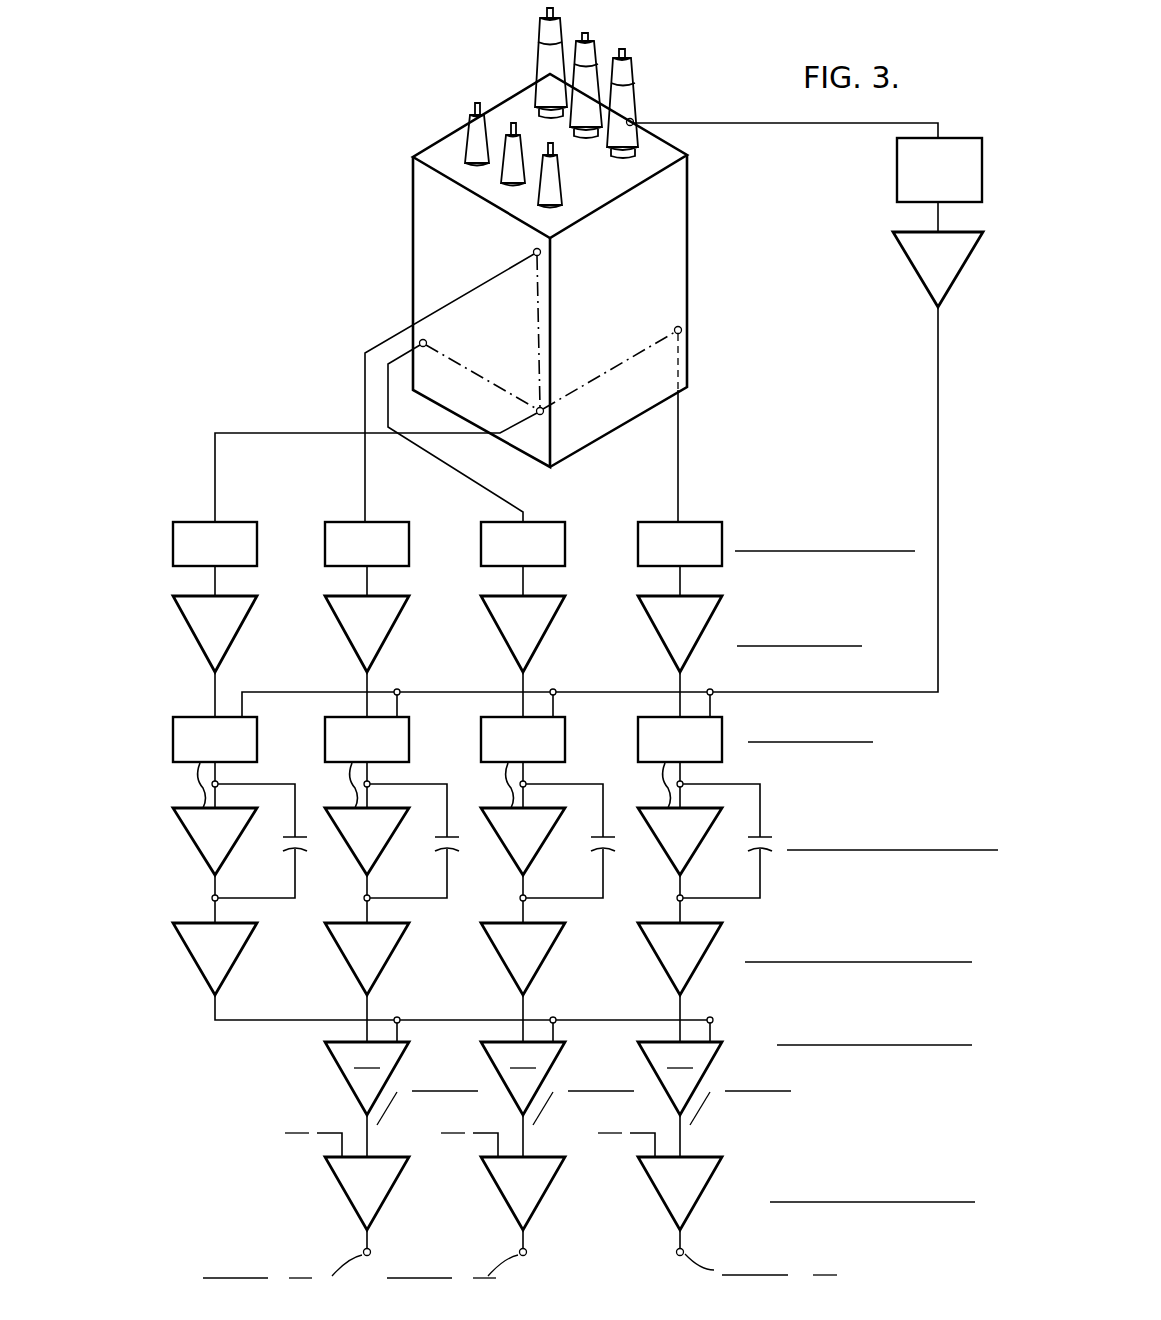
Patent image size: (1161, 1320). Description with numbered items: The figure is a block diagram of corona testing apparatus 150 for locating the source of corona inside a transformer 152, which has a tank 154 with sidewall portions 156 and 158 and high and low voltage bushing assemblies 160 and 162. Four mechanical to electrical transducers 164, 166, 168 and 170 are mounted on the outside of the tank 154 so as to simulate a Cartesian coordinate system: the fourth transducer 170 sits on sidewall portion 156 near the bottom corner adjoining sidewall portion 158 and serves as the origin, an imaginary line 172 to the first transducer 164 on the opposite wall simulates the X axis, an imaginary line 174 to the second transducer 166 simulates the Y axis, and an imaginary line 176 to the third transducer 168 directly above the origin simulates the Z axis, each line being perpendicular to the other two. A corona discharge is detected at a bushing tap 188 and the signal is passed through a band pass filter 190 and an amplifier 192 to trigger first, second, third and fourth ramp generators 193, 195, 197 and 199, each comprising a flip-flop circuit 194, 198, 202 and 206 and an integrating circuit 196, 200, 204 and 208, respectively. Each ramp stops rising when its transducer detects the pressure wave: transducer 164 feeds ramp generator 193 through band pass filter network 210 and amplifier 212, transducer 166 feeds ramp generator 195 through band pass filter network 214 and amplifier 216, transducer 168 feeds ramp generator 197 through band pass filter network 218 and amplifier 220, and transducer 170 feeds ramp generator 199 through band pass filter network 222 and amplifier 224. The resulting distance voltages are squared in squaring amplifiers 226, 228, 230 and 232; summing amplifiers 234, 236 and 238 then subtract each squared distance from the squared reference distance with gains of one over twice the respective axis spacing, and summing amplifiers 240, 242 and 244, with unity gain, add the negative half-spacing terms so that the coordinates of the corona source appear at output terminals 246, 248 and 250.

The corona testing apparatus 150 is at (594, 1291).
The transformer 152 is at (546, 267).
The tank 154 is at (412, 182).
The sidewall portion 156 is at (413, 200).
The sidewall portion 158 is at (688, 197).
The high voltage bushing assembly 160 is at (563, 30).
The low voltage bushing assembly 162 is at (490, 119).
The first mechanical to electrical transducer 164 is at (682, 328).
The second mechanical to electrical transducer 166 is at (428, 344).
The third mechanical to electrical transducer 168 is at (534, 250).
The fourth mechanical to electrical transducer 170 is at (542, 415).
The imaginary line 172 is at (603, 373).
The imaginary line 174 is at (477, 381).
The imaginary line 176 is at (537, 320).
The bushing tap 188 is at (634, 120).
The band pass filter 190 is at (897, 179).
The amplifier 192 is at (905, 254).
The first triggered ramp generator 193 is at (656, 789).
The flip-flop circuit 194 is at (727, 731).
The second triggered ramp generator 195 is at (499, 789).
The integrating circuit 196 is at (695, 809).
The third triggered ramp generator 197 is at (343, 789).
The flip-flop circuit 198 is at (570, 731).
The fourth triggered ramp generator 199 is at (191, 789).
The integrating circuit 200 is at (538, 809).
The flip-flop circuit 202 is at (414, 731).
The integrating circuit 204 is at (382, 809).
The flip-flop circuit 206 is at (262, 731).
The integrating circuit 208 is at (230, 809).
The band pass filter network 210 is at (693, 522).
The amplifier 212 is at (693, 597).
The band pass filter network 214 is at (536, 522).
The amplifier 216 is at (536, 597).
The band pass filter network 218 is at (380, 522).
The amplifier 220 is at (380, 597).
The band pass filter network 222 is at (228, 522).
The amplifier 224 is at (228, 597).
The squaring amplifier 226 is at (695, 924).
The squaring amplifier 228 is at (538, 924).
The squaring amplifier 230 is at (382, 924).
The squaring amplifier 232 is at (230, 924).
The summing amplifier 234 is at (717, 1052).
The summing amplifier 236 is at (560, 1052).
The summing amplifier 238 is at (404, 1052).
The summing amplifier 240 is at (709, 1196).
The summing amplifier 242 is at (552, 1196).
The summing amplifier 244 is at (396, 1196).
The output terminal 246 is at (682, 1250).
The output terminal 248 is at (525, 1250).
The output terminal 250 is at (369, 1250).